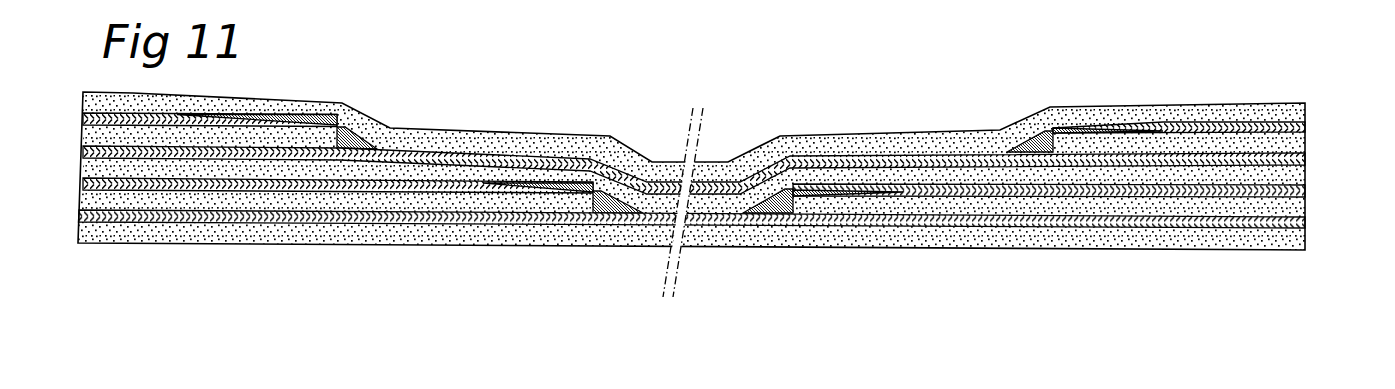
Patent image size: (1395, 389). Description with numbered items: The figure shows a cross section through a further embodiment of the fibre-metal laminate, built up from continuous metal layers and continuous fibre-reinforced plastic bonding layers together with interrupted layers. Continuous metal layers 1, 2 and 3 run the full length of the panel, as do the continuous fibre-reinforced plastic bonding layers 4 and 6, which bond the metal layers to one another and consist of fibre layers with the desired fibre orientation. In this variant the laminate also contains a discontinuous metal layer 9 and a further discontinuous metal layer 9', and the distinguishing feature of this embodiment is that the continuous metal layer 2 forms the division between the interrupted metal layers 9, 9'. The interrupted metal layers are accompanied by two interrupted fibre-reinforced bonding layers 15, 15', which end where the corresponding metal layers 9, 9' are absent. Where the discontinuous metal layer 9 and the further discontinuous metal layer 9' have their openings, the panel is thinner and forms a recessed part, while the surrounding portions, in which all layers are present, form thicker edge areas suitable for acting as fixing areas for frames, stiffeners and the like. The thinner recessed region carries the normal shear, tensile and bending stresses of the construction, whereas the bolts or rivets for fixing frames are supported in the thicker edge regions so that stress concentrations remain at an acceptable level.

The continuous metal layer 1 is at (1297, 247).
The continuous metal layer 2 is at (1297, 175).
The continuous metal layer 3 is at (1284, 110).
The fibre-reinforced plastic bonding layer 4 is at (1297, 220).
The fibre-reinforced plastic bonding layer 6 is at (1300, 157).
The discontinuous metal layer 9 is at (717, 211).
The further discontinuous metal layer 9' is at (723, 133).
The interrupted fibre-reinforced bonding layer 15 is at (727, 195).
The interrupted fibre-reinforced bonding layer 15' is at (725, 111).